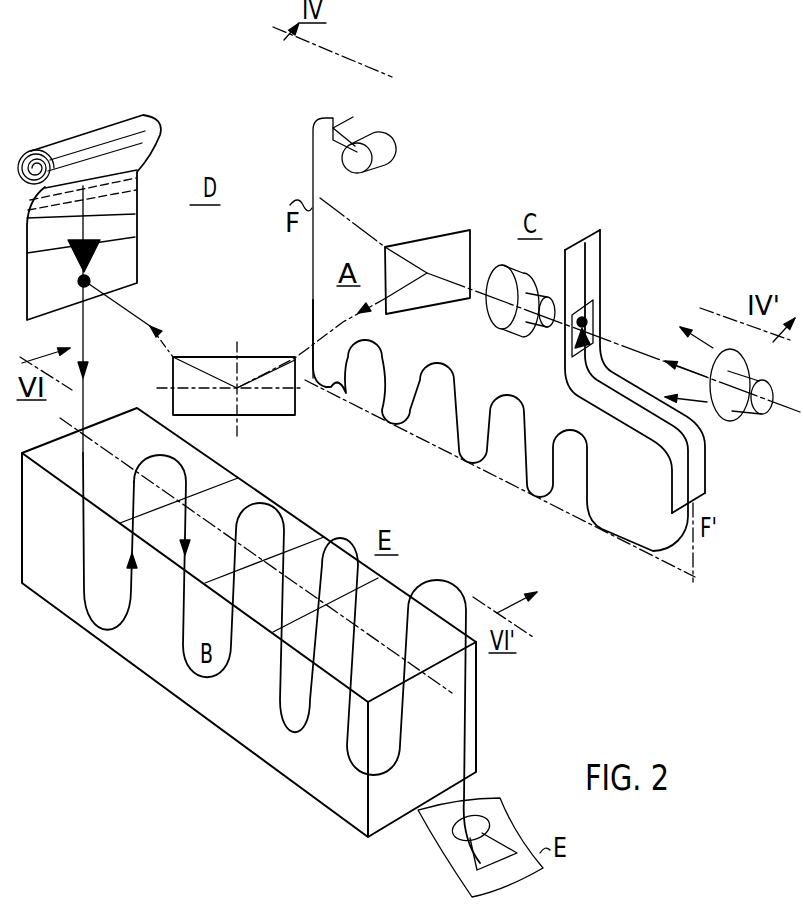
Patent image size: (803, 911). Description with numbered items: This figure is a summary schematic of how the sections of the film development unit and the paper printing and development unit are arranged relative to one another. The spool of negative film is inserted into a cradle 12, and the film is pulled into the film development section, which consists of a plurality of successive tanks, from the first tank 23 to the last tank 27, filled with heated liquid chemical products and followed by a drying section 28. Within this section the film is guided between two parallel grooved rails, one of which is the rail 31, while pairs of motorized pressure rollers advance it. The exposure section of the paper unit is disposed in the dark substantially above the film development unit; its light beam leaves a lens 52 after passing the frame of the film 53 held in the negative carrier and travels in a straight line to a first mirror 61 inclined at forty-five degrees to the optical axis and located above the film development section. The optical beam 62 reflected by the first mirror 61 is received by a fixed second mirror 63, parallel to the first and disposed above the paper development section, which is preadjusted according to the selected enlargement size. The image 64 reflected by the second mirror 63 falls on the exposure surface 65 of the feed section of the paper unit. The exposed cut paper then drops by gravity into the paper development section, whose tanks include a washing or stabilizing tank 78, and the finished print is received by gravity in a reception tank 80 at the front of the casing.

The cradle 12 is at (368, 128).
The tank 23 is at (340, 394).
The tank 27 is at (547, 503).
The drying section 28 is at (667, 452).
The rail 31 is at (575, 381).
The lens 52 is at (507, 312).
The frame of the film 53 is at (596, 316).
The first mirror 61 is at (440, 250).
The optical beam 62 is at (328, 330).
The second mirror 63 is at (250, 415).
The image 64 is at (128, 310).
The exposure surface 65 is at (120, 252).
The washing or stabilizing tank 78 is at (113, 555).
The reception tank 80 is at (249, 622).